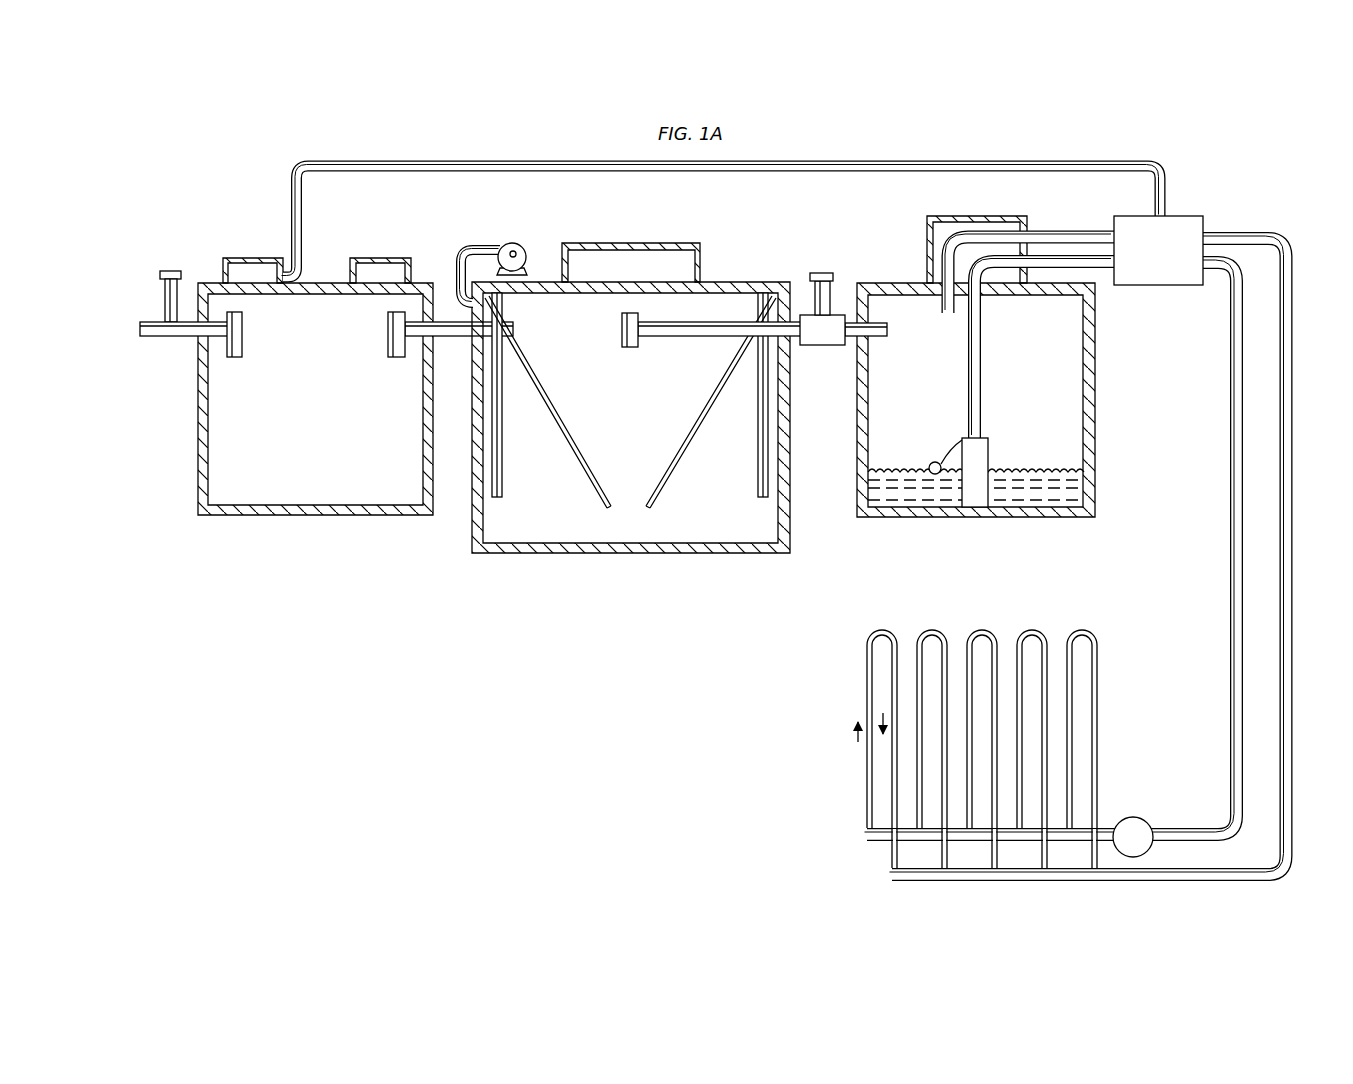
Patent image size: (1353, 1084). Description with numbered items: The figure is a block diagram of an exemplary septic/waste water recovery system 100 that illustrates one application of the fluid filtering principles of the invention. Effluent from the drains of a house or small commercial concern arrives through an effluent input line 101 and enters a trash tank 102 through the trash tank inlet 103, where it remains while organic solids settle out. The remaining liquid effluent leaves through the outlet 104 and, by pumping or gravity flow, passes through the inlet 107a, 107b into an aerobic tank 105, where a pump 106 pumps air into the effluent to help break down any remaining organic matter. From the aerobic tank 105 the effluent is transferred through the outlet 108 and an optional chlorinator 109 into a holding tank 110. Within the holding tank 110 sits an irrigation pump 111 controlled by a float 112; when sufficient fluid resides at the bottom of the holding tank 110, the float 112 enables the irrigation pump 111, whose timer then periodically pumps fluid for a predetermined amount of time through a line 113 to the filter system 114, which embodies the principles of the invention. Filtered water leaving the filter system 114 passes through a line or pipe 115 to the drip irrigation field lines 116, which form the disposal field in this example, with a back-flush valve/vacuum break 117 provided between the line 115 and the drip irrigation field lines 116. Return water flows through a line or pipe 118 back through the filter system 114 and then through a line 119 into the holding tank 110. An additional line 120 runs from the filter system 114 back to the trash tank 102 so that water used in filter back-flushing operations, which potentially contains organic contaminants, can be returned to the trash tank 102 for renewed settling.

The septic/waste water recovery system 100 is at (212, 183).
The effluent input line 101 is at (152, 338).
The trash tank 102 is at (300, 520).
The trash tank inlet 103 is at (243, 335).
The outlet 104 is at (388, 341).
The aerobic tank 105 is at (651, 558).
The pump 106 is at (515, 243).
The inlet 107a is at (503, 478).
The inlet 107b is at (757, 478).
The outlet 108 is at (630, 349).
The chlorinator 109 is at (820, 272).
The holding tank 110 is at (987, 522).
The irrigation pump 111 is at (990, 457).
The float 112 is at (931, 462).
The line 113 is at (984, 365).
The filter system 114 is at (1160, 287).
The line or pipe 115 is at (1229, 540).
The drip irrigation field lines 116 is at (866, 783).
The back-flush valve/vacuum break 117 is at (1138, 816).
The line or pipe 118 is at (1250, 230).
The line 119 is at (1068, 229).
The additional line 120 is at (1167, 190).